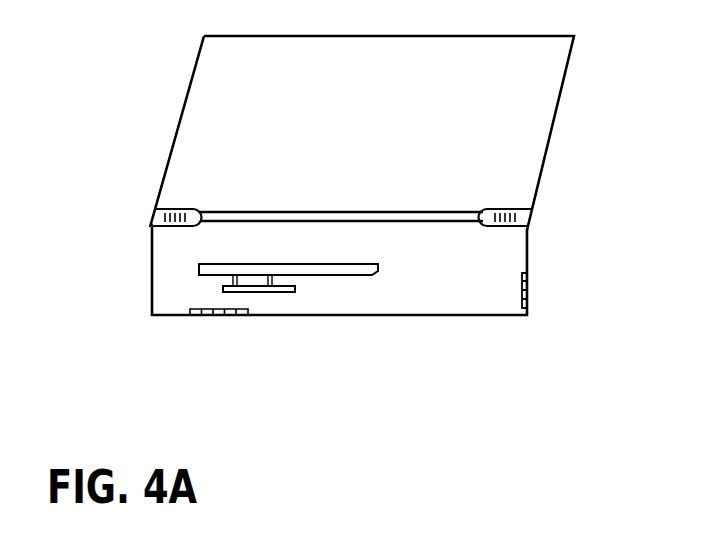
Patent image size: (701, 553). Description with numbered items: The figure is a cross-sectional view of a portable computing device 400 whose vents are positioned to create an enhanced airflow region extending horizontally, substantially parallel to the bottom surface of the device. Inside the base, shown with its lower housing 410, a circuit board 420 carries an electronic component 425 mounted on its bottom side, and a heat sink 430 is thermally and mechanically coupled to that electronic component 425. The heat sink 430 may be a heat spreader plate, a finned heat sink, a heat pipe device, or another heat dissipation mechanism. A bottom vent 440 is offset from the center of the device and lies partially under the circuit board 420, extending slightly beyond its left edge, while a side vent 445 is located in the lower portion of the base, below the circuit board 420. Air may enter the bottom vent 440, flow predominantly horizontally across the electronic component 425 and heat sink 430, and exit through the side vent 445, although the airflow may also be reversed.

The portable computing device 400 is at (566, 232).
The base housing 410 is at (437, 316).
The circuit board 420 is at (374, 273).
The electronic component 425 is at (235, 282).
The heat sink 430 is at (290, 292).
The bottom vent 440 is at (230, 316).
The side vent 445 is at (528, 288).